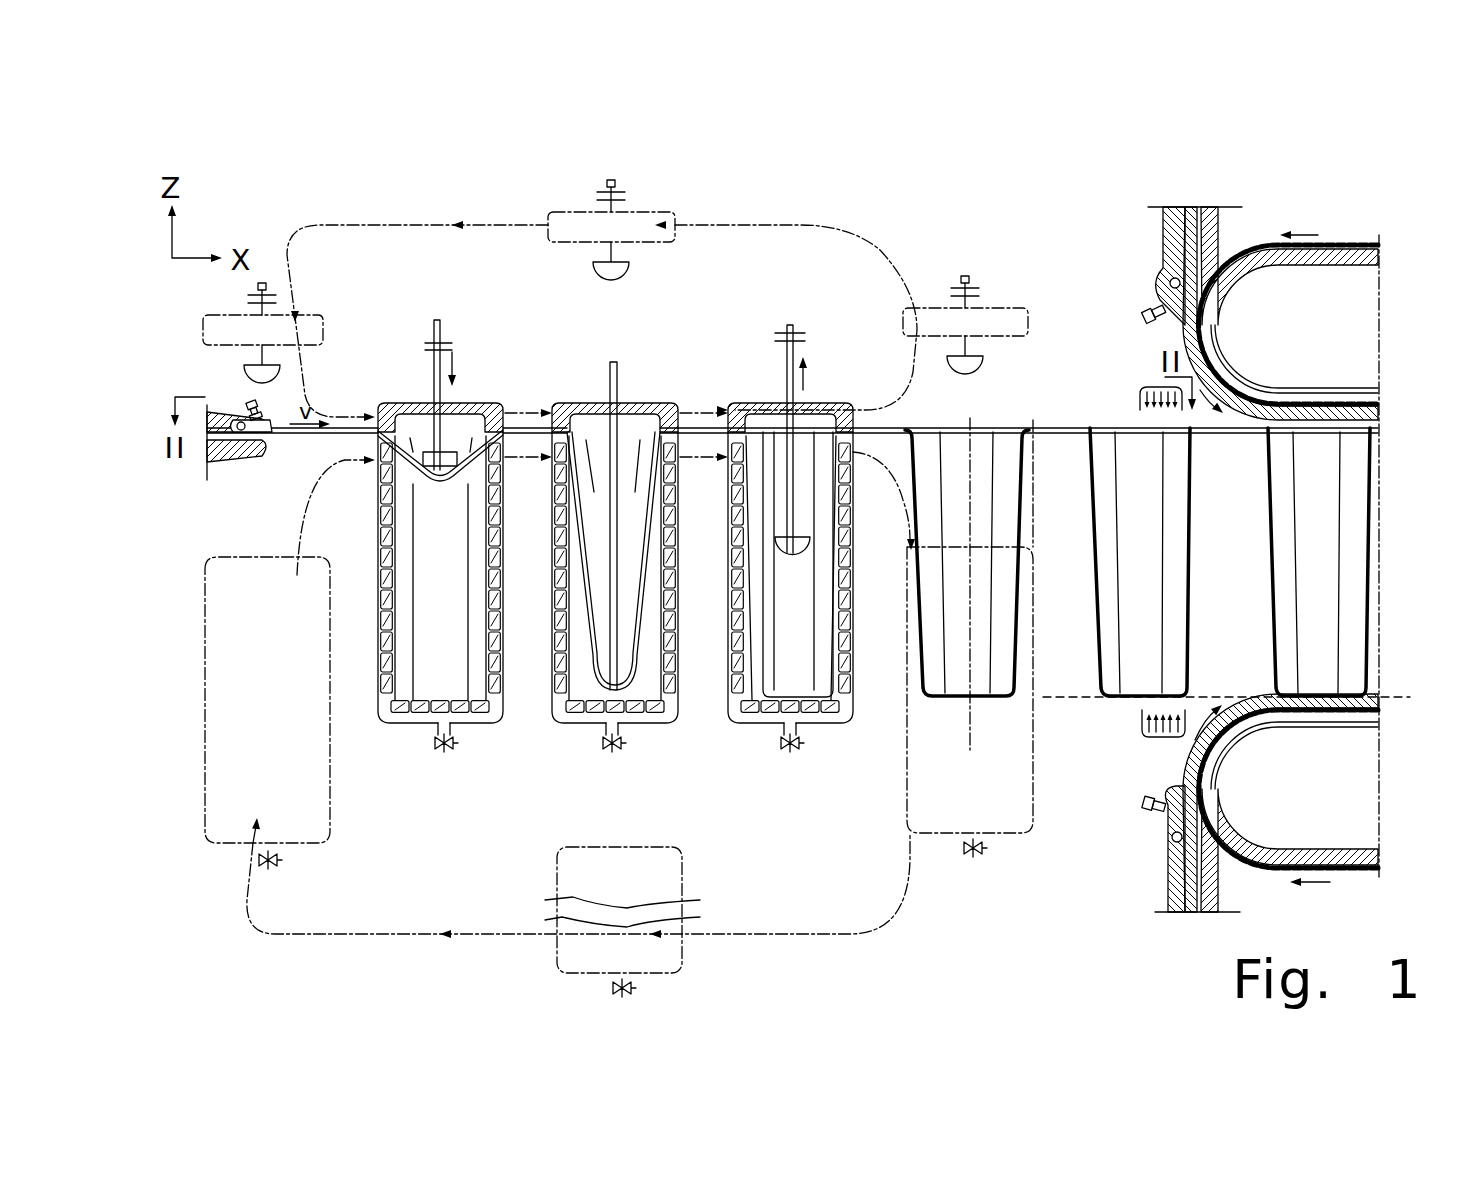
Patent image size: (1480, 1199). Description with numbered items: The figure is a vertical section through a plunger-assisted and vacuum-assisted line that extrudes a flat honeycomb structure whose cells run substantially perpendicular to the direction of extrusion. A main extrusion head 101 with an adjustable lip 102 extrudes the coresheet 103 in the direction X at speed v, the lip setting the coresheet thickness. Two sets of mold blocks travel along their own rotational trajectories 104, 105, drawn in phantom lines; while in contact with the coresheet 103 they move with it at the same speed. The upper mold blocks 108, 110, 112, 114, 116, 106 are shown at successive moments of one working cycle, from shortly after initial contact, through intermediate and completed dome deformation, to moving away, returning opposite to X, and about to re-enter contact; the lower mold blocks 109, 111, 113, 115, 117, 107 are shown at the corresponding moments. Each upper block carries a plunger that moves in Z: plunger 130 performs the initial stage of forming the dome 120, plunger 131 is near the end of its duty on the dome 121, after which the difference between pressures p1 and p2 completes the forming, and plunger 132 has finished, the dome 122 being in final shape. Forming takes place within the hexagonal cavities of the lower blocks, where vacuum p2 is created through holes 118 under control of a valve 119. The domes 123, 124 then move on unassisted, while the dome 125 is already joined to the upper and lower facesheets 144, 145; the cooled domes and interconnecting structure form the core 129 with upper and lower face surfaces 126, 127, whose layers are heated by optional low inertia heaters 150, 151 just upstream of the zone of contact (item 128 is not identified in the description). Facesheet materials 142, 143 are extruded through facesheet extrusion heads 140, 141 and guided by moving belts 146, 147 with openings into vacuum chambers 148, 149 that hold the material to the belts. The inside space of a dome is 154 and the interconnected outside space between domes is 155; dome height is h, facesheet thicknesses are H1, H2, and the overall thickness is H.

The main extrusion head 101 is at (221, 400).
The adjustable lip 102 is at (273, 418).
The coresheet 103 is at (280, 443).
The trajectory of upper mold blocks 104 is at (390, 223).
The trajectory of lower mold blocks 105 is at (330, 940).
The upper mold block 106 is at (200, 312).
The lower mold block 107 is at (220, 855).
The upper mold block 108 is at (481, 392).
The lower mold block 109 is at (394, 745).
The upper mold block 110 is at (555, 393).
The lower mold block 111 is at (546, 740).
The upper mold block 112 is at (736, 392).
The lower mold block 113 is at (752, 742).
The upper mold block 114 is at (1016, 294).
The lower mold block 115 is at (897, 827).
The upper mold block 116 is at (532, 207).
The lower mold block 117 is at (543, 975).
The holes 118 is at (600, 707).
The valve 119 is at (623, 752).
The dome 120 is at (432, 470).
The dome 121 is at (587, 655).
The dome 122 is at (823, 665).
The dome 123 is at (920, 643).
The dome 124 is at (1098, 492).
The dome 125 is at (1367, 555).
The upper face surface 126 is at (1042, 419).
The lower face surface 127 is at (1053, 700).
The film bottom 128 is at (950, 705).
The core 129 is at (934, 400).
The plunger 130 is at (436, 358).
The plunger 131 is at (610, 360).
The plunger 132 is at (788, 327).
The upper facesheet extrusion head 140 is at (1256, 499).
The lower facesheet extrusion head 141 is at (1237, 831).
The material of upper facesheet 142 is at (1188, 340).
The material of lower facesheet 143 is at (1130, 752).
The upper facesheet 144 is at (1360, 445).
The lower facesheet 145 is at (1373, 650).
The moving belt 146 is at (1351, 235).
The moving belt 147 is at (1363, 873).
The vacuum chamber 148 is at (1352, 388).
The vacuum chamber 149 is at (1360, 727).
The low inertia heater 150 is at (1126, 382).
The low inertia heater 151 is at (1193, 770).
The inside space of a dome 154 is at (1322, 487).
The outside space between domes 155 is at (1373, 605).
The pressure p1 is at (630, 638).
The pressure p2 is at (665, 716).
The height of the domes h is at (1065, 432).
The overall thickness of the honeycomb structure H is at (1463, 412).
The thickness of upper facesheet H1 is at (1382, 407).
The thickness of lower facesheet H2 is at (1383, 707).